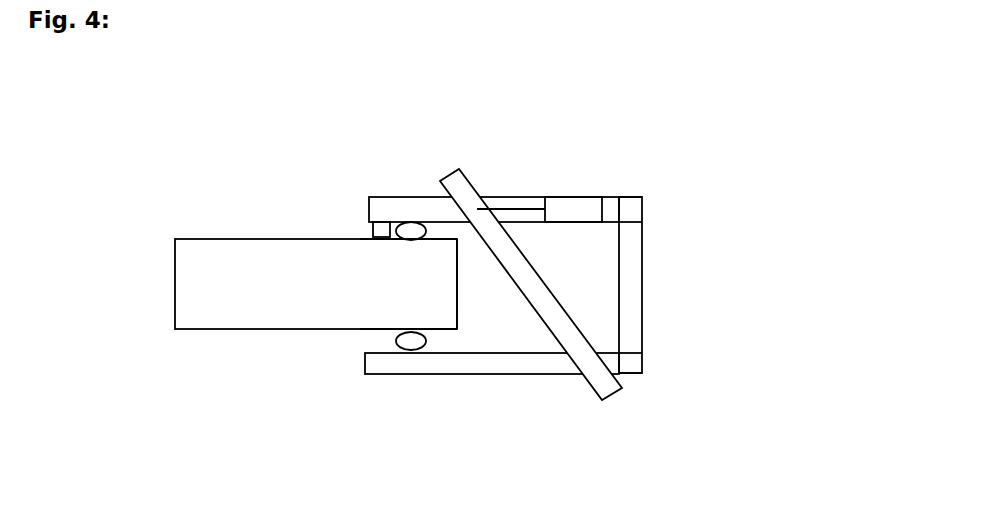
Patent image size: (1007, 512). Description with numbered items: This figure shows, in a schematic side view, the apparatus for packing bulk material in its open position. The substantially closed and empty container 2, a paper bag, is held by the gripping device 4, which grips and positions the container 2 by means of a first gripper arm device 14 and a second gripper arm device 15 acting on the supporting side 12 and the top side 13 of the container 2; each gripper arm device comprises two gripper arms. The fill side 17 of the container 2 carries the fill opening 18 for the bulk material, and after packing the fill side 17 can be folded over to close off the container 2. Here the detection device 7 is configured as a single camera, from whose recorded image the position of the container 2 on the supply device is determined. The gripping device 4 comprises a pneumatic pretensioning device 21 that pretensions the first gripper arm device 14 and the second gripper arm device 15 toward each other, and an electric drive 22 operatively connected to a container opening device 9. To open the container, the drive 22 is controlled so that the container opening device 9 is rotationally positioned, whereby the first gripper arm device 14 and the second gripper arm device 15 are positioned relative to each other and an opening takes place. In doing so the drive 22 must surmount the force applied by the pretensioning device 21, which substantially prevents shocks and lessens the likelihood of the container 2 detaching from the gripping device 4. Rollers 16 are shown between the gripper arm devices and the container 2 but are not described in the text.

The container 2 is at (236, 212).
The gripping device 4 is at (665, 240).
The detection device 7 is at (382, 222).
The container opening device 9 is at (620, 392).
The supporting side 12 is at (359, 329).
The top side 13 is at (360, 239).
The first gripper arm device 14 is at (530, 197).
The second gripper arm device 15 is at (530, 374).
The rollers 16 is at (413, 332).
The fill side 17 is at (457, 290).
The fill opening 18 is at (497, 365).
The pretensioning device 21 is at (642, 285).
The drive 22 is at (568, 197).